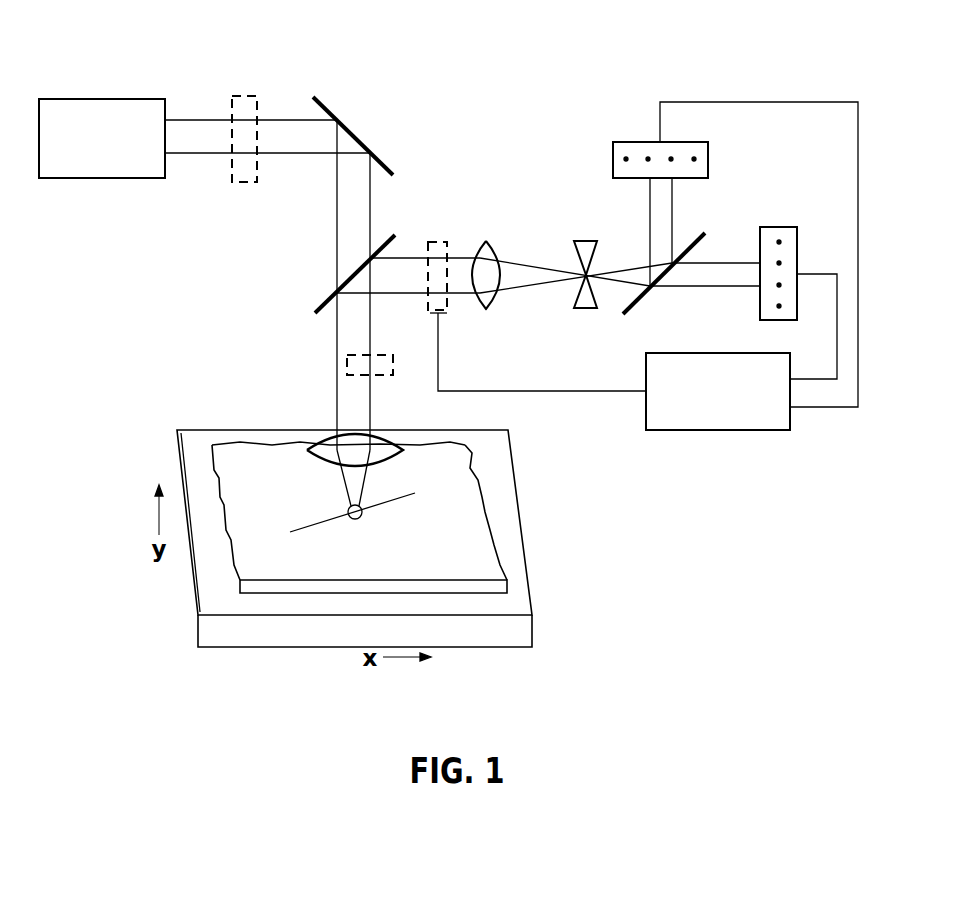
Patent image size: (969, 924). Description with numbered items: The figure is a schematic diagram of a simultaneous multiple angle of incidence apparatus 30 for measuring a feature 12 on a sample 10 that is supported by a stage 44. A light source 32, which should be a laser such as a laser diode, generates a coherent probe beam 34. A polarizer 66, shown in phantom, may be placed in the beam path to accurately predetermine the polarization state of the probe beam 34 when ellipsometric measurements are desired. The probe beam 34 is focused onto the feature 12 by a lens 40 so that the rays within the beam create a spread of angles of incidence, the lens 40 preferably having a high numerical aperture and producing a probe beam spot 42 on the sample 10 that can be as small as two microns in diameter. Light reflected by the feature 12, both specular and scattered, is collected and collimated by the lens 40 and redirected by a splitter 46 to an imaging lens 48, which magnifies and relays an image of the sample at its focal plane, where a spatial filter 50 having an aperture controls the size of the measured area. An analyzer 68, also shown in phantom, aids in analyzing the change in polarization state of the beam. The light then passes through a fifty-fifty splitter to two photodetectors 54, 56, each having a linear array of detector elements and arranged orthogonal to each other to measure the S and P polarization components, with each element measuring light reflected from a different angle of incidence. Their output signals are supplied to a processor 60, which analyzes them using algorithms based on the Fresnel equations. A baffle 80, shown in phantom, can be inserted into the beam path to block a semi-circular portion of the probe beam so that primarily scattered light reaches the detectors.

The simultaneous multiple angle of incidence apparatus 30 is at (528, 59).
The light source 32 is at (80, 98).
The polarizer 66 is at (238, 96).
The probe beam 34 is at (303, 118).
The splitter 46 is at (322, 300).
The analyzer 68 is at (433, 240).
The imaging lens 48 is at (493, 245).
The spatial filter 50 is at (586, 241).
The photodetector 56 is at (708, 155).
The photodetector 54 is at (782, 227).
The processor 60 is at (718, 430).
The baffle 80 is at (394, 374).
The lens 40 is at (325, 437).
The probe beam spot 42 is at (362, 517).
The feature 12 is at (402, 490).
The sample 10 is at (302, 576).
The stage 44 is at (512, 501).